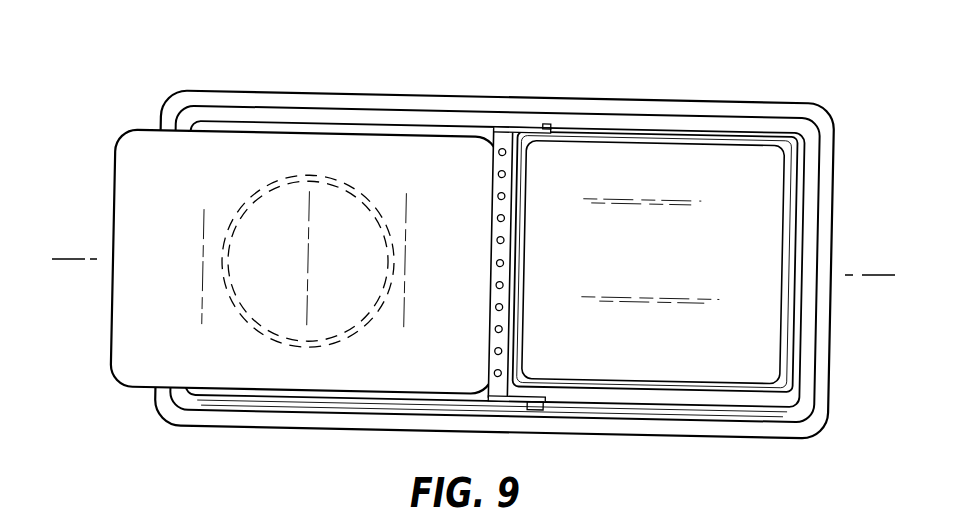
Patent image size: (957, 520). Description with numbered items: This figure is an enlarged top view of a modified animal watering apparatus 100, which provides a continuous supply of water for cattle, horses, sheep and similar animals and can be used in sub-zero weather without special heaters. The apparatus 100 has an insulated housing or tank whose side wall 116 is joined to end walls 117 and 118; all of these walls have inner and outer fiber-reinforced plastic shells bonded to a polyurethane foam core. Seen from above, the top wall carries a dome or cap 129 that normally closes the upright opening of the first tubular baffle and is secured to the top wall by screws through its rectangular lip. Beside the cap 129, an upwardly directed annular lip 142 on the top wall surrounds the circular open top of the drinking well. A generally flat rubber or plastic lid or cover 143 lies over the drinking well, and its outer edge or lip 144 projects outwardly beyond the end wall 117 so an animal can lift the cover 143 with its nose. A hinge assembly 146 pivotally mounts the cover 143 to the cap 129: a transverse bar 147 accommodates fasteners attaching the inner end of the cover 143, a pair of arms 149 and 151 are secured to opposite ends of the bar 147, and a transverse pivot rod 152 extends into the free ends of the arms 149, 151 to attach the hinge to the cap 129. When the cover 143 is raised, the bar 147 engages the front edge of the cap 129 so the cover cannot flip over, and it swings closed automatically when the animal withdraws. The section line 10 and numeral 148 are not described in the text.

The animal watering apparatus 100 is at (521, 223).
The section line 10 is at (65, 266).
The side wall 116 is at (533, 414).
The end wall 117 is at (413, 108).
The end wall 118 is at (815, 195).
The cap 129 is at (745, 160).
The annular lip 142 is at (258, 330).
The cover 143 is at (240, 145).
The lip 144 is at (133, 183).
The hinge assembly 146 is at (486, 245).
The transverse bar 147 is at (492, 186).
The hinge hole 148 is at (497, 352).
The arm 149 is at (518, 127).
The arm 151 is at (517, 402).
The pivot rod 152 is at (545, 125).